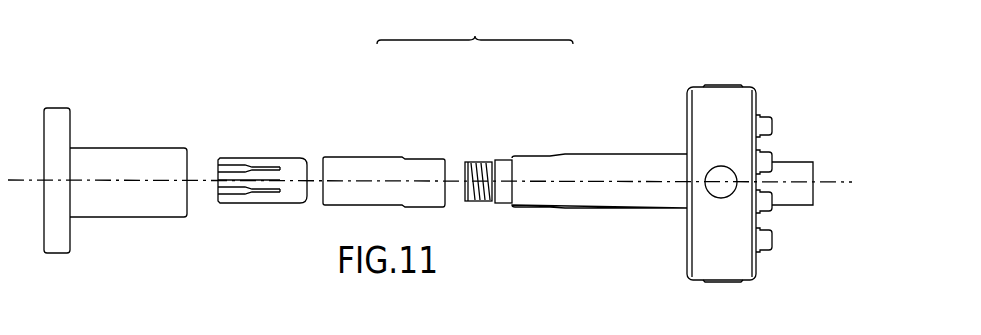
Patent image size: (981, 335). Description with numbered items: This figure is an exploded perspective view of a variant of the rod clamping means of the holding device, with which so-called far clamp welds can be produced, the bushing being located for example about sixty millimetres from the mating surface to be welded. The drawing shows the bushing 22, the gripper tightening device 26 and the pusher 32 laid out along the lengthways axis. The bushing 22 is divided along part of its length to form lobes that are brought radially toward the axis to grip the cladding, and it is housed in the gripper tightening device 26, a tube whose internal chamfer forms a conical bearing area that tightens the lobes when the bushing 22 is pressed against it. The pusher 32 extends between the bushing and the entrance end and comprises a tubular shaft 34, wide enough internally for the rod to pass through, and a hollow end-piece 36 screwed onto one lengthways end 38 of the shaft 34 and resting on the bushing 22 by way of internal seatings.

The gripper tightening device 26 is at (128, 116).
The bushing 22 is at (260, 128).
The pusher 32 is at (475, 26).
The end-piece 36 is at (365, 126).
The lengthways end of shaft 38 is at (482, 162).
The tubular shaft 34 is at (579, 126).